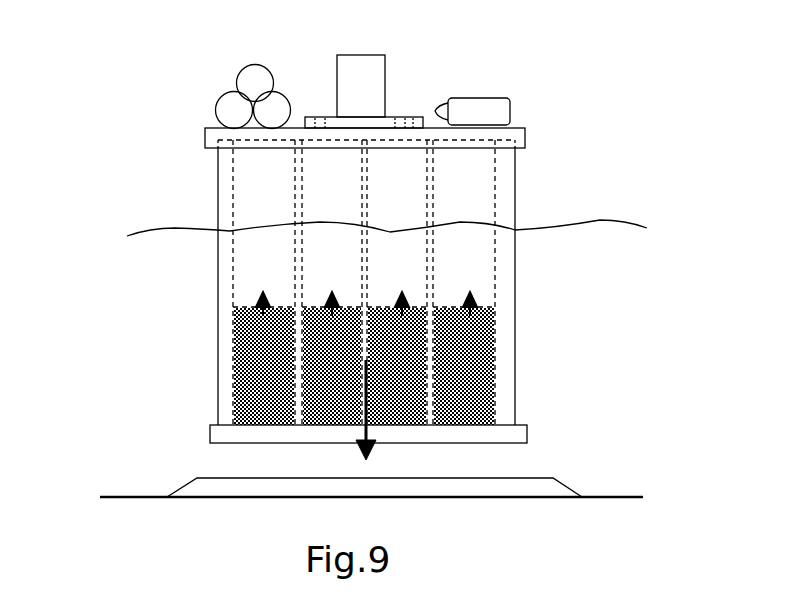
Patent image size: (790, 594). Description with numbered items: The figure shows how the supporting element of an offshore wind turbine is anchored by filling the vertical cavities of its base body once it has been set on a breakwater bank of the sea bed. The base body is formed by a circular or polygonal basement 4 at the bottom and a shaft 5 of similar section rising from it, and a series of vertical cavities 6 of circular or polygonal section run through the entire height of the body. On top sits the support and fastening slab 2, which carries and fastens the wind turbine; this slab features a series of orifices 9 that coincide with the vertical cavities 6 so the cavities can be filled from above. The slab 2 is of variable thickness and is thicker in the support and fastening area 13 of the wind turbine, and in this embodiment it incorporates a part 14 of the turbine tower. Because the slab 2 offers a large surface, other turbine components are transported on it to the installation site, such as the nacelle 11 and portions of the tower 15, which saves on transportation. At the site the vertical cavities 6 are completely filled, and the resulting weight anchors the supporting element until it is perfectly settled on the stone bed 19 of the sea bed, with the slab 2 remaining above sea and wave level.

The support and fastening slab 2 is at (525, 133).
The basement 4 is at (218, 432).
The shaft 5 is at (223, 186).
The vertical cavities 6 is at (250, 283).
The orifices 9 is at (463, 133).
The nacelle 11 is at (507, 107).
The support and fastening area 13 is at (318, 118).
The part of the wind turbine tower 14 is at (388, 58).
The portions of the tower 15 is at (220, 98).
The stone bed 19 is at (215, 478).